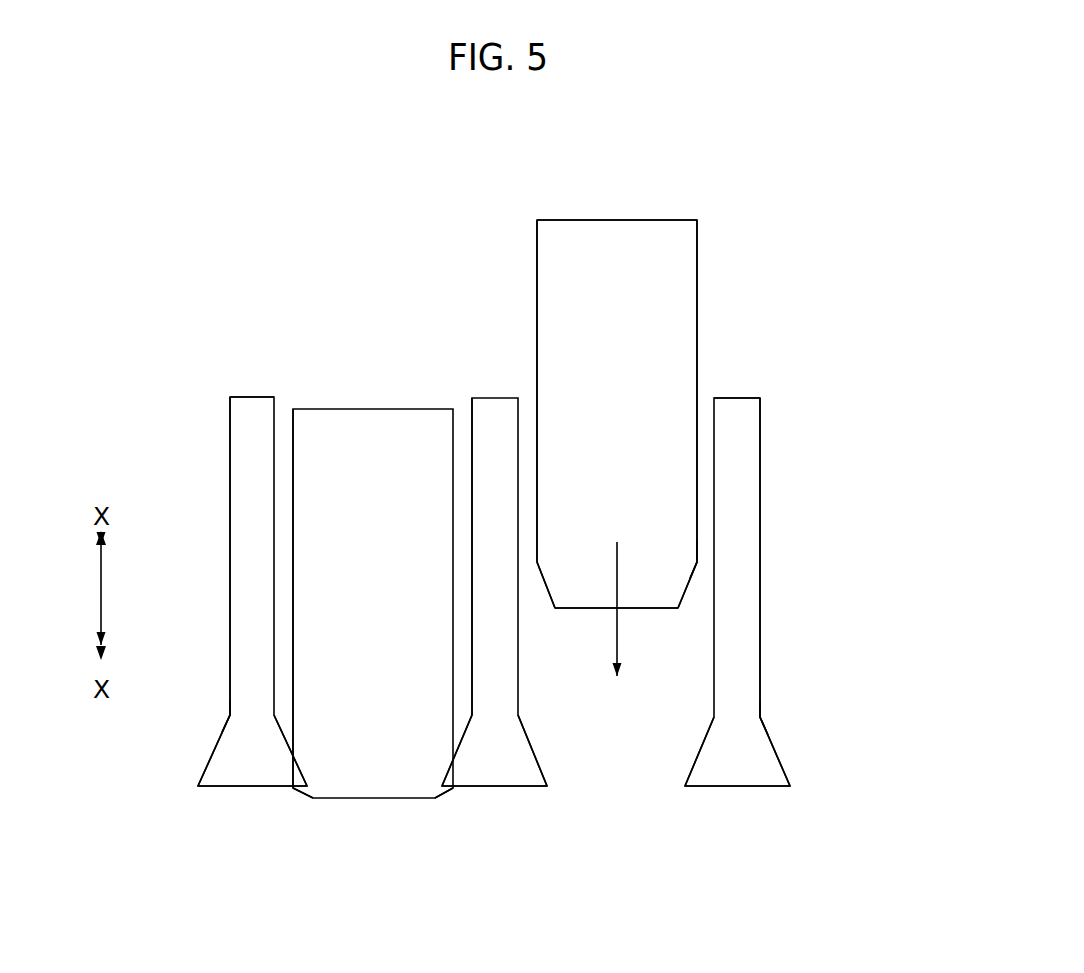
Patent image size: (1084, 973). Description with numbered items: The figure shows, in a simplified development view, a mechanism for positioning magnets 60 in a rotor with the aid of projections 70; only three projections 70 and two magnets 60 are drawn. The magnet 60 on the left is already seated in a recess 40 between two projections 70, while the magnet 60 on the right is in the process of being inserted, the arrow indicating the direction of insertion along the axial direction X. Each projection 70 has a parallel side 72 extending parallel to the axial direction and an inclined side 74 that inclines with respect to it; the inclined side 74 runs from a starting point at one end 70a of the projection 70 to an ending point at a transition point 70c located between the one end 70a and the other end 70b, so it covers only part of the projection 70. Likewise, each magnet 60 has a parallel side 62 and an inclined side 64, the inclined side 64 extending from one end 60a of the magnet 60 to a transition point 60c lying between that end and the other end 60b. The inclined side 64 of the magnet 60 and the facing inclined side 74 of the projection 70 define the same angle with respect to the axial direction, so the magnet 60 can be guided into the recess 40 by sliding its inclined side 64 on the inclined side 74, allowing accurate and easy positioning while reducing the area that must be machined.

The recess 40 is at (287, 408).
The magnet 60 is at (647, 220).
The one end of the magnet 60a is at (684, 620).
The other end of the magnet 60b is at (529, 217).
The transition point of the magnet 60c is at (708, 562).
The parallel side of the magnet 62 is at (537, 268).
The inclined side of the magnet 64 is at (690, 590).
The projection 70 is at (252, 397).
The one end of the projection 70a is at (195, 787).
The other end of the projection 70b is at (220, 391).
The transition point of the projection 70c is at (222, 711).
The parallel side of the projection 72 is at (230, 505).
The inclined side of the projection 74 is at (210, 760).